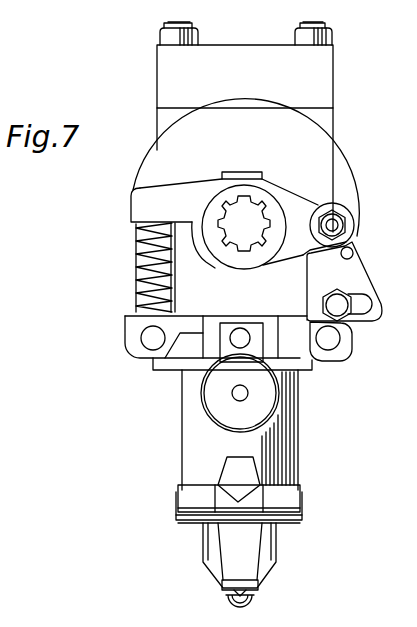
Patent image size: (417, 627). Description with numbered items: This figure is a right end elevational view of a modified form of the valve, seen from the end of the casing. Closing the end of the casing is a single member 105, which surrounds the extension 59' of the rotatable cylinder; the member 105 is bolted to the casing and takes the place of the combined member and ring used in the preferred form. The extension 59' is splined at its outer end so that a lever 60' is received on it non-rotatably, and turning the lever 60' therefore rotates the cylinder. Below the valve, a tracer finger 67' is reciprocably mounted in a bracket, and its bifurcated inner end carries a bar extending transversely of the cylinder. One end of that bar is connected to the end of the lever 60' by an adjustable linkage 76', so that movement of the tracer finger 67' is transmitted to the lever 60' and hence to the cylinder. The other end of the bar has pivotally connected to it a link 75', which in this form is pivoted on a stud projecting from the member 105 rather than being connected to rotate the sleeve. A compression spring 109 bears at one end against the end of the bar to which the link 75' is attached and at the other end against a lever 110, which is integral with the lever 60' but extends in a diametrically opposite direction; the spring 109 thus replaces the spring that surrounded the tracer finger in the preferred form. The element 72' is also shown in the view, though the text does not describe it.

The single member 105 is at (250, 143).
The lever 60' is at (265, 208).
The extension 59' is at (244, 223).
The lever 110 is at (146, 208).
The compression spring 109 is at (137, 267).
The link 75' is at (196, 267).
The adjustable linkage 76' is at (355, 270).
The lower bracket 72' is at (240, 360).
The tracer finger 67' is at (270, 565).